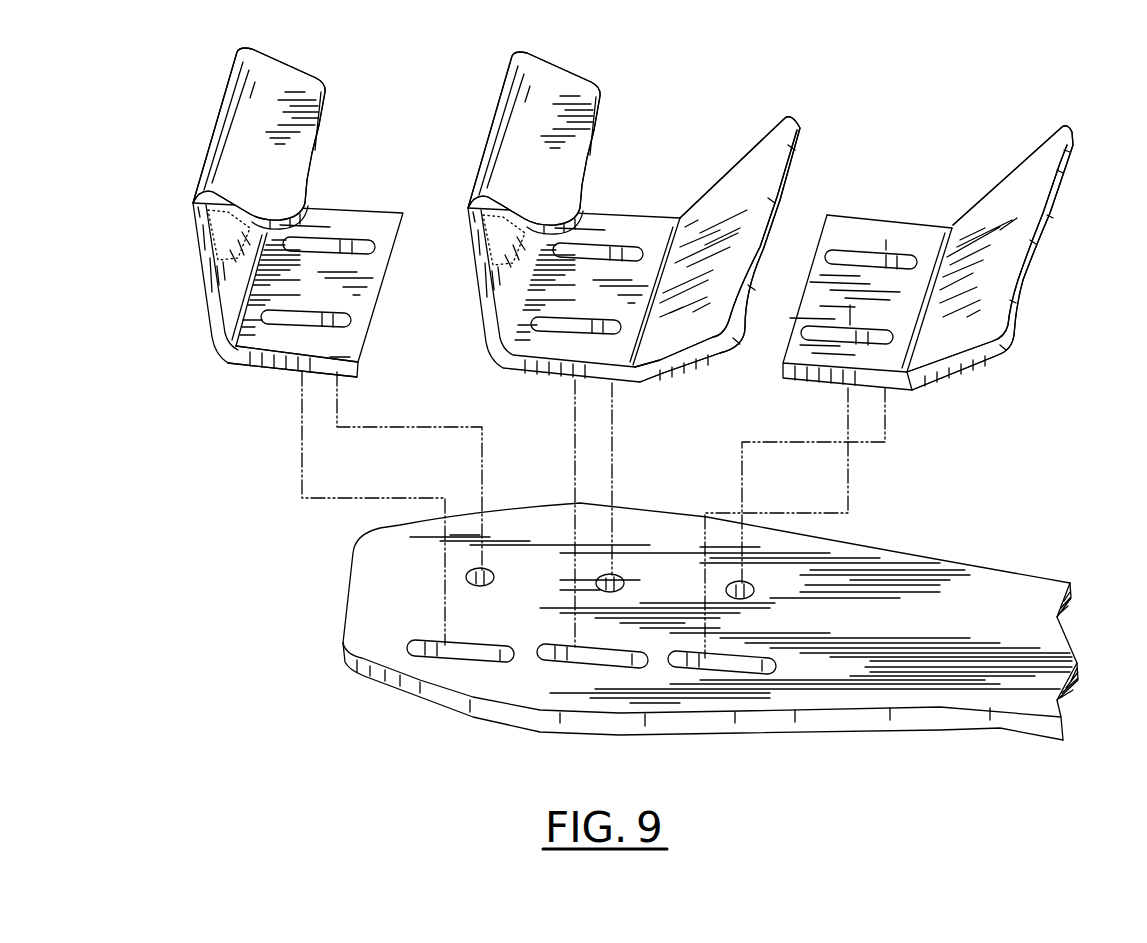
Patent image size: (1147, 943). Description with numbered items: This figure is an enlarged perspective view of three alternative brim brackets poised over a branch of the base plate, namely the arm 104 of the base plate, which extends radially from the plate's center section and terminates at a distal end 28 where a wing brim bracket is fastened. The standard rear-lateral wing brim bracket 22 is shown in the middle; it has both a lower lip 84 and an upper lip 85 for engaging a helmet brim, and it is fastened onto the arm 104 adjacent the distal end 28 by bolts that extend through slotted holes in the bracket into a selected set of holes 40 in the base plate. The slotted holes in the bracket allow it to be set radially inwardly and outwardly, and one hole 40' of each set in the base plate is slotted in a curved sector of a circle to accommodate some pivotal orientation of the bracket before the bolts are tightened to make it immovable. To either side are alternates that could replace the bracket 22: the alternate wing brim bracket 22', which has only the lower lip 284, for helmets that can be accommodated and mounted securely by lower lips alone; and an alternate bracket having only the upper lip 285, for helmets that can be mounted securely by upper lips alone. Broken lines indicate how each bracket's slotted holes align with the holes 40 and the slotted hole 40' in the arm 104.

The upper lip 285 is at (316, 130).
The rear-lateral wing brim bracket 22 is at (634, 217).
The upper lip 85 is at (594, 126).
The lower lip 84 is at (790, 162).
The alternate wing brim bracket 22' is at (928, 237).
The lower lip 284 is at (1050, 182).
The distal end 28 is at (347, 600).
The arm 104 is at (970, 570).
The holes 40 is at (610, 539).
The slotted hole 40' is at (591, 703).